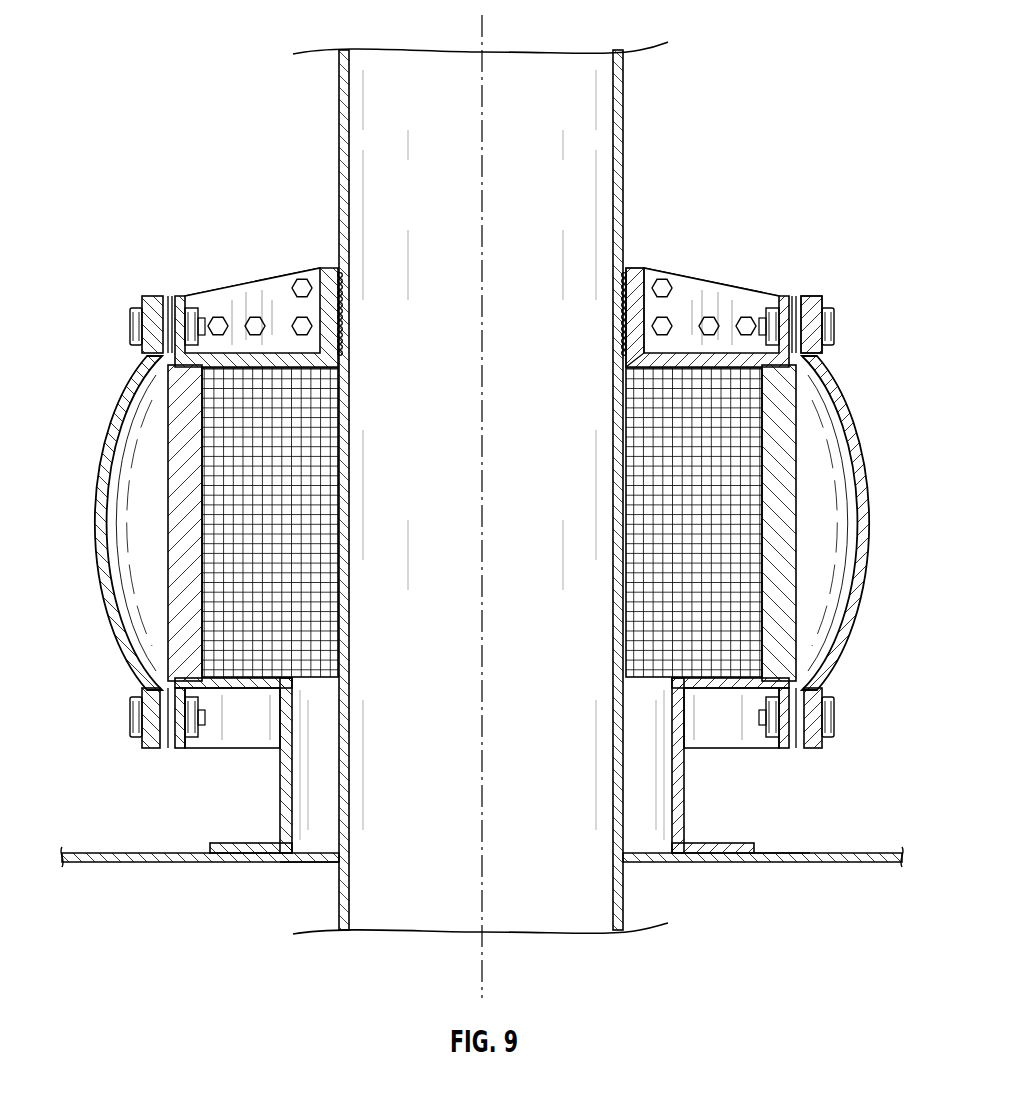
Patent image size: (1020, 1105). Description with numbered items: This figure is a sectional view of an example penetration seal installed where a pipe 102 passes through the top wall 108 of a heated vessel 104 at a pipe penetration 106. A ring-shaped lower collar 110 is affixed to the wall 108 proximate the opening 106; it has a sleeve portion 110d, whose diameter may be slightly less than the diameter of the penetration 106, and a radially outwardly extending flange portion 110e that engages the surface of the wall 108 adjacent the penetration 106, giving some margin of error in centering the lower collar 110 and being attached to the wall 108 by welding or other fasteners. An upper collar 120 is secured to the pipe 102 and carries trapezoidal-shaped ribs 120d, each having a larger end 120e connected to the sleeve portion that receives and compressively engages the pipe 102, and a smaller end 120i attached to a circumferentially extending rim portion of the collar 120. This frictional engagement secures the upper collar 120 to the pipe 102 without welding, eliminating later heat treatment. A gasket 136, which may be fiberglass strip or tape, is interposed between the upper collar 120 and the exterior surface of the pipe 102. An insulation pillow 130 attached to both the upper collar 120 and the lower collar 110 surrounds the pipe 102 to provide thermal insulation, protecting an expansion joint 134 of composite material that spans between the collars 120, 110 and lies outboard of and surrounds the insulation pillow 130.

The pipe 102 is at (622, 130).
The heated vessel 104 is at (845, 868).
The pipe penetration 106 is at (300, 865).
The top wall 108 is at (780, 853).
The lower collar 110 is at (108, 698).
The sleeve portion 110d is at (278, 766).
The flange portion 110e is at (230, 843).
The upper collar 120 is at (905, 256).
The trapezoidal-shaped rib 120d is at (737, 297).
The larger end 120e is at (652, 278).
The smaller end 120i is at (205, 300).
The insulation pillow 130 is at (228, 408).
The expansion joint 134 is at (98, 463).
The gasket 136 is at (338, 272).